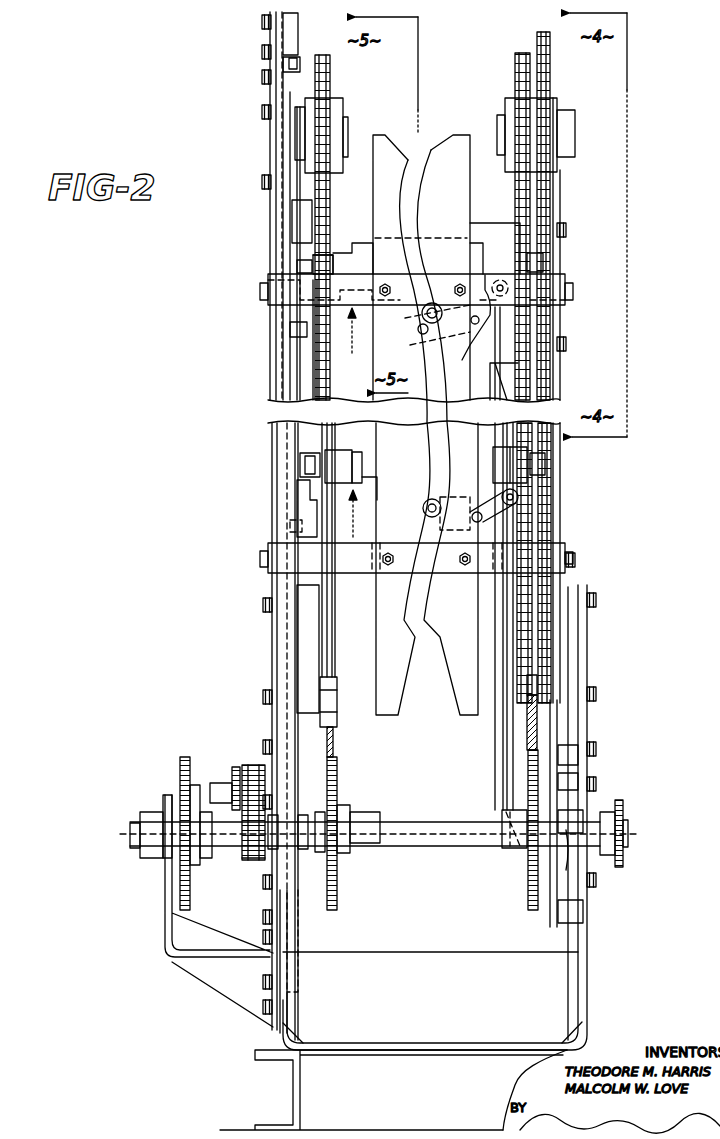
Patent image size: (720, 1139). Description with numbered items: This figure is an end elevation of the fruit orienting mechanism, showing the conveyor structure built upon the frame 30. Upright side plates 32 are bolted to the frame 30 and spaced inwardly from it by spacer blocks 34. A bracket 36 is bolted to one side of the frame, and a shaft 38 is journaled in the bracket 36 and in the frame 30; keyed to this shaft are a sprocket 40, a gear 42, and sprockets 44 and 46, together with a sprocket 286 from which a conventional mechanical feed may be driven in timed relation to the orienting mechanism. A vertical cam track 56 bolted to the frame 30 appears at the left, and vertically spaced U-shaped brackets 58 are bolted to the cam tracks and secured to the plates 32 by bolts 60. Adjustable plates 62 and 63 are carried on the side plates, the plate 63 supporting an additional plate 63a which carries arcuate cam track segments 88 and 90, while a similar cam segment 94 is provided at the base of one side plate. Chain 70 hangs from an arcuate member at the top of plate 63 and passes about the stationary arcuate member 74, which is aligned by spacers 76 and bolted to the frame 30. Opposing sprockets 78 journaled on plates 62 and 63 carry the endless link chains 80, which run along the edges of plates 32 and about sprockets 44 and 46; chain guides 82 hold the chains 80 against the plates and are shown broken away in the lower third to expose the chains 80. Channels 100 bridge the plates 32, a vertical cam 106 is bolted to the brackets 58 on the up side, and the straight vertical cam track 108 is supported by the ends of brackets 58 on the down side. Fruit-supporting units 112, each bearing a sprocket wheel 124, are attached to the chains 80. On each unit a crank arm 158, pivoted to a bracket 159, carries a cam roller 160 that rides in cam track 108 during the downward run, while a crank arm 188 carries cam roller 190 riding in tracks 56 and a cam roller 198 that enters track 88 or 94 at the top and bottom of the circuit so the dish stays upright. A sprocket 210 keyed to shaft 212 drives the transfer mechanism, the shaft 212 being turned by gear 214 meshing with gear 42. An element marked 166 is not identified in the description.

The frame 30 is at (275, 717).
The upright side plates 32 is at (333, 742).
The spacer blocks 34 is at (302, 628).
The bracket 36 is at (165, 928).
The shaft 38 is at (415, 833).
The sprocket 40 is at (180, 770).
The gear 42 is at (253, 862).
The sprocket 44 is at (333, 912).
The sprocket 46 is at (528, 900).
The upright cam tracks 56 is at (275, 379).
The U-shaped brackets 58 is at (268, 280).
The bolts 60 is at (261, 293).
The plate 62 is at (294, 186).
The plate 63 is at (552, 200).
The additional plate 63a is at (276, 90).
The chain 70 is at (550, 85).
The stationary arcuate member 74 is at (552, 927).
The spacers 76 is at (575, 763).
The sprockets 78 is at (343, 108).
The endless link chains 80 is at (333, 86).
The chain guides 82 is at (315, 343).
The arcuate cam track segment 88 is at (285, 30).
The arcuate cam track segment 90 is at (287, 143).
The cam segment 94 is at (290, 936).
The channels 100 is at (486, 226).
The second vertical cam 106 is at (437, 704).
The straight vertical cam track 108 is at (490, 370).
The fruit-supporting units 112 is at (360, 250).
The sprocket wheel 124 is at (545, 265).
The crank arm 158 is at (492, 338).
The bracket 159 is at (478, 340).
The cam roller 160 is at (500, 280).
The pivot 166 is at (434, 305).
The crank arm 188 is at (307, 503).
The cam roller 190 is at (290, 328).
The cam roller 198 is at (298, 266).
The sprocket 210 is at (235, 783).
The shaft 212 is at (232, 795).
The gear 214 is at (250, 764).
The sprocket 286 is at (622, 866).